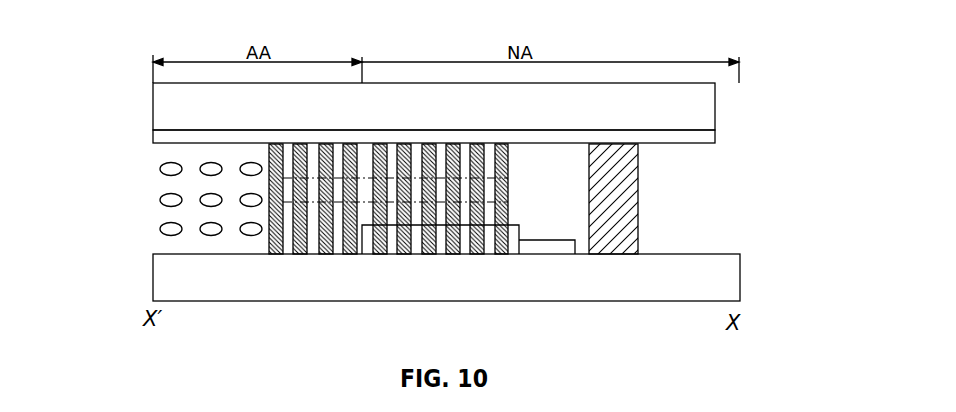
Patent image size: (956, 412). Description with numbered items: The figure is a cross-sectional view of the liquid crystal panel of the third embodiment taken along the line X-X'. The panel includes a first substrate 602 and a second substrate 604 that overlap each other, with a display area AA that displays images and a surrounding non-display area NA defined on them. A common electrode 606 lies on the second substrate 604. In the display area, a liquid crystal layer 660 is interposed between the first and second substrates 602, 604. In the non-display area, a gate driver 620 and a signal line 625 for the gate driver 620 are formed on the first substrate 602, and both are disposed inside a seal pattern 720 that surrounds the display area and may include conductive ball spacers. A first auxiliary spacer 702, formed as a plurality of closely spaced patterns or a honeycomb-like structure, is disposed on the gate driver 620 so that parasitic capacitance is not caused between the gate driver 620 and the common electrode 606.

The first substrate 602 is at (730, 278).
The second substrate 604 is at (707, 106).
The common electrode 606 is at (712, 136).
The gate driver 620 is at (420, 244).
The signal line 625 is at (552, 252).
The liquid crystal layer 660 is at (166, 229).
The first auxiliary spacer 702 is at (484, 190).
The seal pattern 720 is at (630, 190).